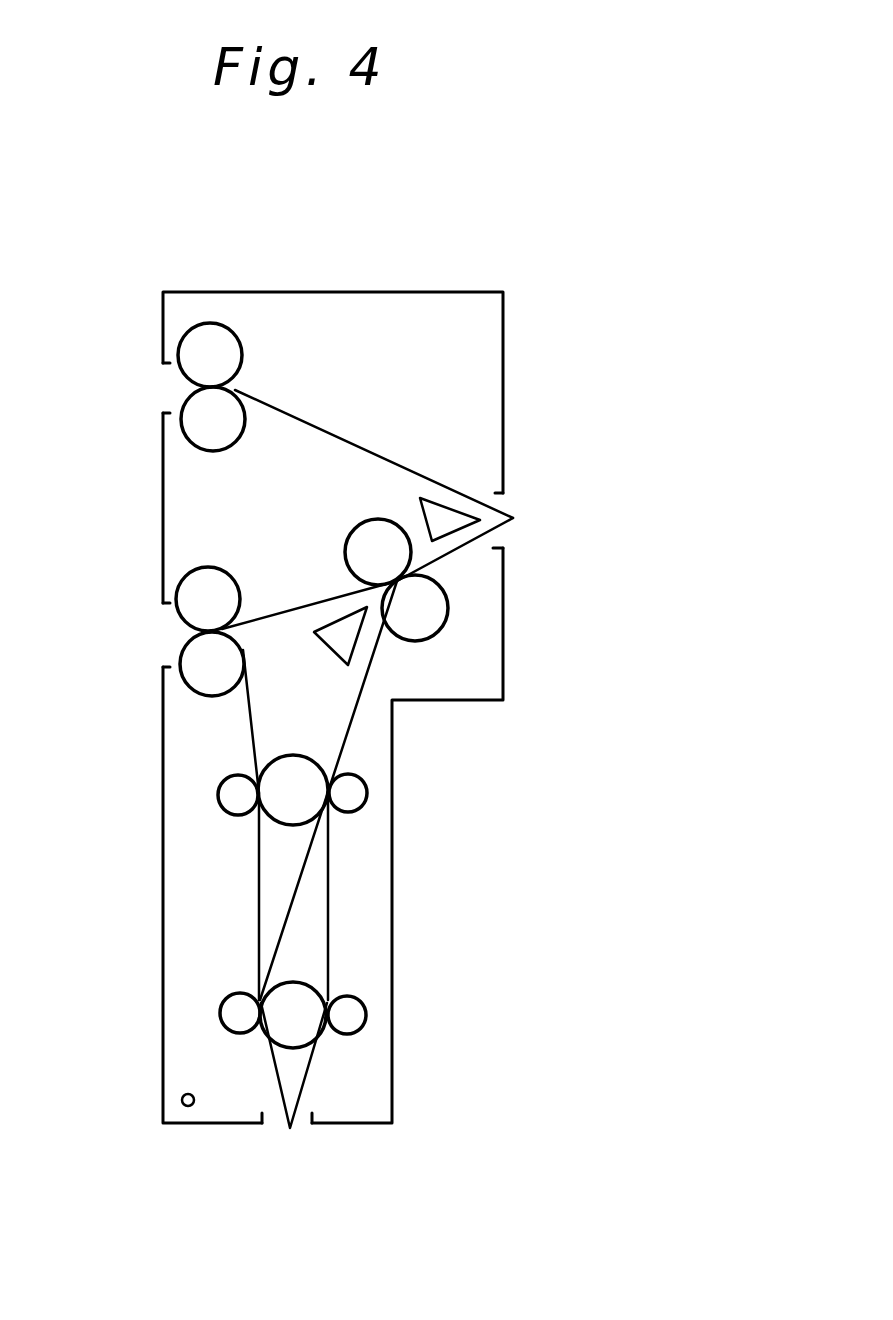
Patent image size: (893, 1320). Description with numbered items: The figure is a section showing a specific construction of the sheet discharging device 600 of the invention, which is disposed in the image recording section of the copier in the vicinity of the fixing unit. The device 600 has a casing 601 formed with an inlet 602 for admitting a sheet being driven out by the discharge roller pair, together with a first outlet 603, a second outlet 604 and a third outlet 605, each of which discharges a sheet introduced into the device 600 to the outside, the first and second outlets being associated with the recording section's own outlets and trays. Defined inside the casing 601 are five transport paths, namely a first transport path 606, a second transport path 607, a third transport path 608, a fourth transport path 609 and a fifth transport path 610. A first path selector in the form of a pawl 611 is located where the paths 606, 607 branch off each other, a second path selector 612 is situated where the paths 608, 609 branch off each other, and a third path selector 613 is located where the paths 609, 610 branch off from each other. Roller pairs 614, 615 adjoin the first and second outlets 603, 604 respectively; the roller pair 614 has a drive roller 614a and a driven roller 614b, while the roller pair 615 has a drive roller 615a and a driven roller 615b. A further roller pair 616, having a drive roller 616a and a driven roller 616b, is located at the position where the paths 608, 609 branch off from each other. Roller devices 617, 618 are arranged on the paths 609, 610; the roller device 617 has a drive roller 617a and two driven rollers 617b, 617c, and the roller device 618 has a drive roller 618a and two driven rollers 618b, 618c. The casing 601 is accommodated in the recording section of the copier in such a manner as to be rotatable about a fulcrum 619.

The sheet discharging device 600 is at (526, 248).
The casing 601 is at (352, 292).
The inlet 602 is at (500, 497).
The first outlet 603 is at (165, 390).
The second outlet 604 is at (167, 625).
The third outlet 605 is at (275, 1120).
The first transport path 606 is at (337, 436).
The second transport path 607 is at (465, 548).
The third transport path 608 is at (287, 610).
The fourth transport path 609 is at (346, 652).
The fifth transport path 610 is at (250, 733).
The pawl 611 is at (440, 505).
The second path selector 612 is at (378, 640).
The third path selector 613 is at (300, 892).
The roller pair 614 is at (189, 451).
The drive roller 614a is at (228, 452).
The driven roller 614b is at (220, 322).
The roller pair 615 is at (184, 570).
The drive roller 615a is at (192, 690).
The driven roller 615b is at (210, 567).
The roller pair 616 is at (452, 640).
The drive roller 616a is at (424, 642).
The driven roller 616b is at (357, 528).
The roller device 617 is at (378, 807).
The drive roller 617a is at (292, 755).
The driven roller 617b is at (218, 801).
The driven roller 617c is at (355, 812).
The roller device 618 is at (381, 1018).
The drive roller 618a is at (303, 983).
The driven roller 618b is at (221, 1005).
The driven roller 618c is at (352, 1034).
The fulcrum 619 is at (182, 1100).